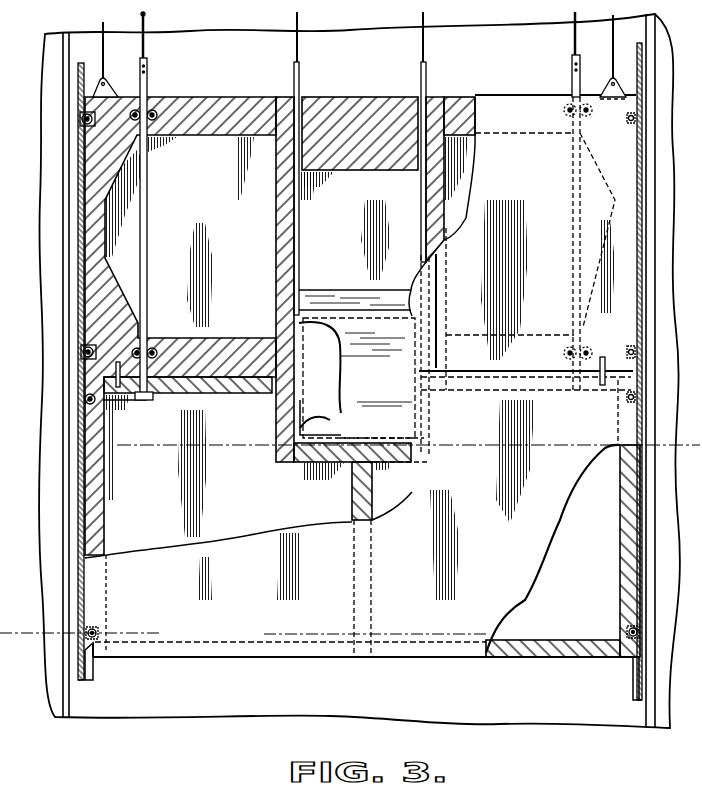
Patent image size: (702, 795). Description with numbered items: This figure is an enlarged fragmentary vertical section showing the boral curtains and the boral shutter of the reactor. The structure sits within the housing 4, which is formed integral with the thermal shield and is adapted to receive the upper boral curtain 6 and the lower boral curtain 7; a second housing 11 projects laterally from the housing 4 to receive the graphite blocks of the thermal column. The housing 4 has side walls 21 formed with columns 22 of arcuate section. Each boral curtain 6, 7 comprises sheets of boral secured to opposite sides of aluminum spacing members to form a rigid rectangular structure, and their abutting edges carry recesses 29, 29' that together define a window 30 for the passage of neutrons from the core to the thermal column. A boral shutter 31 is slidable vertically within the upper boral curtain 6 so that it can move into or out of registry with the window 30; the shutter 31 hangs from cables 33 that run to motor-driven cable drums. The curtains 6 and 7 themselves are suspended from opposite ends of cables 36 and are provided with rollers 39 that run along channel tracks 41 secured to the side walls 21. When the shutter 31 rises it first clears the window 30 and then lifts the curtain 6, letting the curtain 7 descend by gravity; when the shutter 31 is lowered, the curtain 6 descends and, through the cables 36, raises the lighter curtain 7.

The housing 4 is at (62, 53).
The upper boral curtain 6 is at (238, 97).
The lower boral curtain 7 is at (239, 650).
The housing 11 is at (173, 277).
The side walls 21 is at (83, 703).
The columns 22 is at (377, 170).
The recess 29 is at (320, 367).
The recess 29' is at (319, 422).
The window 30 is at (294, 395).
The boral shutter 31 is at (391, 386).
The cables 33 is at (294, 48).
The cables 36 is at (145, 20).
The rollers 39 is at (97, 627).
The channel tracks 41 is at (92, 675).